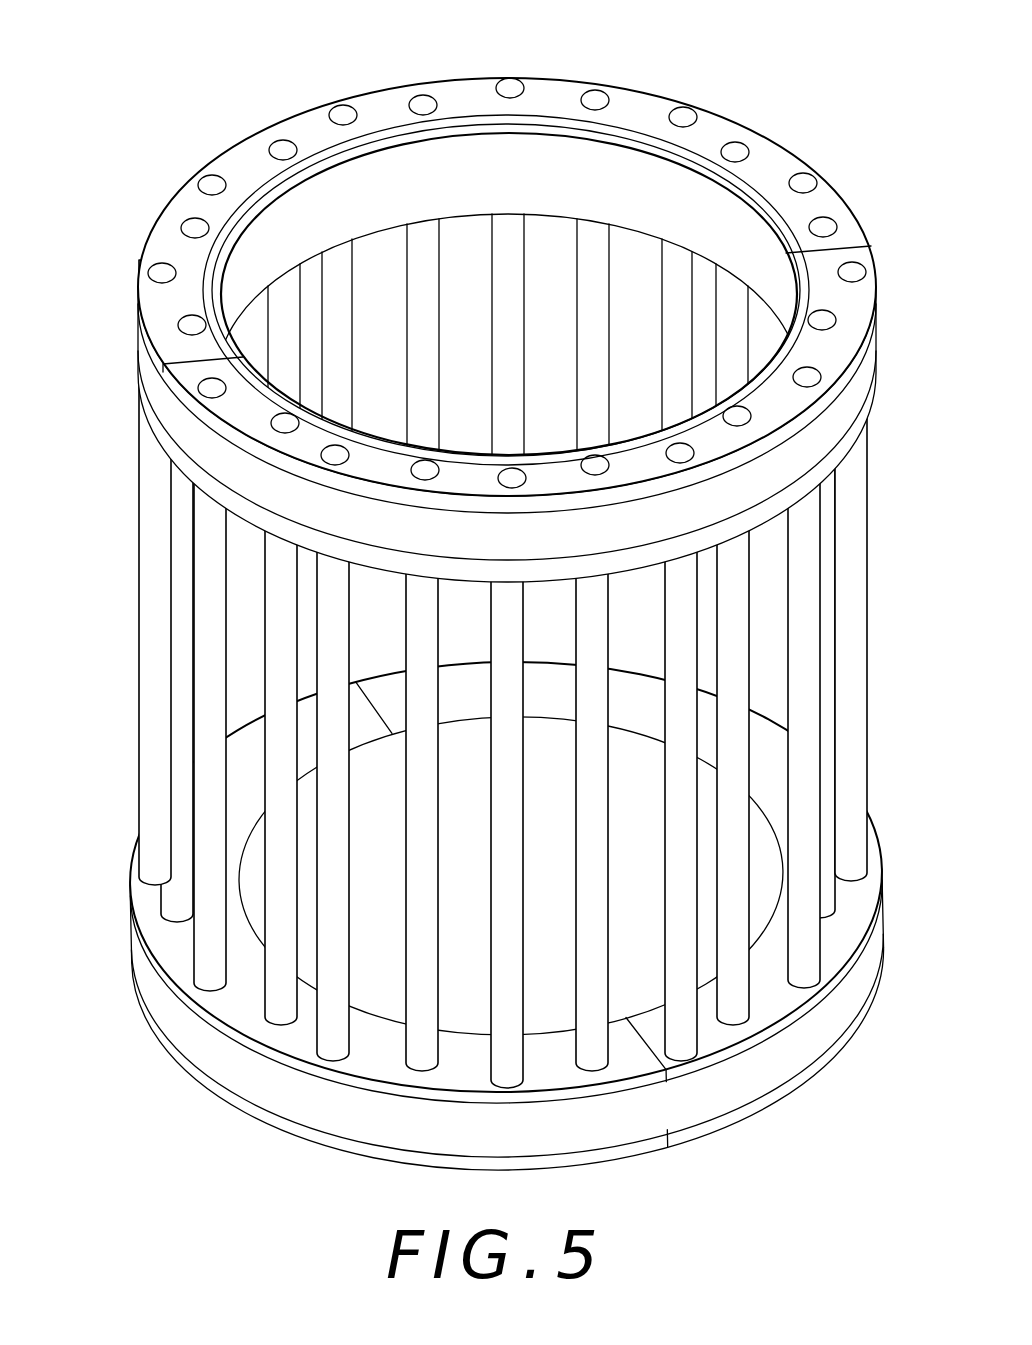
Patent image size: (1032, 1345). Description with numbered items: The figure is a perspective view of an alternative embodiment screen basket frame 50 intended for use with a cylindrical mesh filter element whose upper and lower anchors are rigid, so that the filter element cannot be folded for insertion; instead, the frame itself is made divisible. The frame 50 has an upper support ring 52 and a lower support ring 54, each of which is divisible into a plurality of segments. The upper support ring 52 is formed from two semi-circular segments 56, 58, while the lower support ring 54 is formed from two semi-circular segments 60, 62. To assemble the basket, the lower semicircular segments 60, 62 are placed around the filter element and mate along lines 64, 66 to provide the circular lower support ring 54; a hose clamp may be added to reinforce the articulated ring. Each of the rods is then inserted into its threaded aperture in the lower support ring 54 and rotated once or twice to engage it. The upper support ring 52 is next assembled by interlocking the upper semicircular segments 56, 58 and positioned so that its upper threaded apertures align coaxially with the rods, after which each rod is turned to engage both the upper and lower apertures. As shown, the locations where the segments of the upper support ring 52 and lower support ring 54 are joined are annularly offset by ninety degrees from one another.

The screen basket frame 50 is at (504, 597).
The upper support ring 52 is at (628, 124).
The lower support ring 54 is at (504, 891).
The semi-circular segment 56 is at (507, 302).
The semi-circular segment 58 is at (541, 470).
The semi-circular segment 60 is at (835, 945).
The semi-circular segment 62 is at (155, 990).
The mating line 64 is at (667, 1075).
The mating line 66 is at (368, 680).